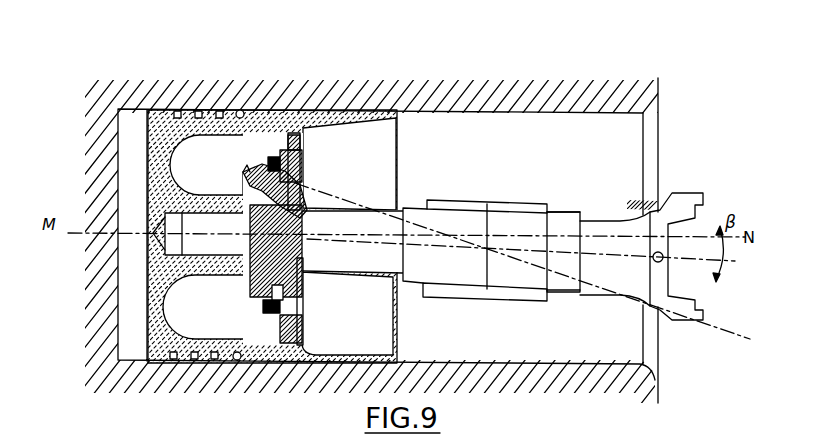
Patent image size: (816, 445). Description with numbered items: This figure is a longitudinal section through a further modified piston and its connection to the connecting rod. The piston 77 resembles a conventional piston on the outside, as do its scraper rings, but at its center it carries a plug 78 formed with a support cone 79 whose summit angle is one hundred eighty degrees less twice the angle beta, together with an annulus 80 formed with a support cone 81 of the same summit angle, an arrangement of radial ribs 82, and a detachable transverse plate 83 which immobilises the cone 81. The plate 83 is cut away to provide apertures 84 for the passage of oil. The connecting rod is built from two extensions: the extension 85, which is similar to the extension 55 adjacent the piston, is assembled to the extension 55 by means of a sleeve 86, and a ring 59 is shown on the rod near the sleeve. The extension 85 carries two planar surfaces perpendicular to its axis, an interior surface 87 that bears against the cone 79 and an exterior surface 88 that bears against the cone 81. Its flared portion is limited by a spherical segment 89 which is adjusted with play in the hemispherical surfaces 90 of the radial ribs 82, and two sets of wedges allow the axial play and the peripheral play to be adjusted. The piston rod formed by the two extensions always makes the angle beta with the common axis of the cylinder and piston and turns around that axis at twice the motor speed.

The extension 55 is at (607, 224).
The ring 59 is at (562, 214).
The piston 77 is at (294, 110).
The plug 78 is at (232, 281).
The support cone 79 is at (240, 188).
The annulus 80 is at (298, 318).
The support cone 81 is at (299, 291).
The radial ribs 82 is at (282, 140).
The transverse plate 83 is at (306, 166).
The apertures 84 is at (292, 323).
The extension 85 is at (396, 212).
The sleeve 86 is at (472, 200).
The interior surface 87 is at (300, 203).
The exterior surface 88 is at (258, 294).
The spherical segment 89 is at (255, 303).
The hemispherical surfaces 90 is at (246, 166).